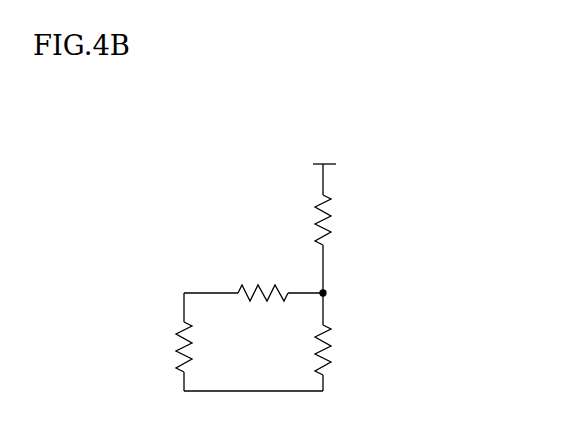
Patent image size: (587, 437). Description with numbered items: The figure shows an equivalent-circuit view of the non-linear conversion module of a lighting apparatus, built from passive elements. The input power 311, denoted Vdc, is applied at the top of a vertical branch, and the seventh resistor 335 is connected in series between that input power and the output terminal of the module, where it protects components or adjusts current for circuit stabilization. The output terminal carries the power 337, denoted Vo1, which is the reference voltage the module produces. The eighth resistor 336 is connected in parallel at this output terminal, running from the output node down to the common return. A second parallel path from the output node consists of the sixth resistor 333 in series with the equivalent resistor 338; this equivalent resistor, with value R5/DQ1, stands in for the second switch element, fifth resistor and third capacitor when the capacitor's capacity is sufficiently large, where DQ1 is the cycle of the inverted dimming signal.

The input power 311 is at (378, 167).
The sixth resistor 333 is at (265, 287).
The seventh resistor 335 is at (330, 214).
The eighth resistor 336 is at (331, 350).
The power of the output terminal 337 is at (328, 291).
The equivalent resistor 338 is at (176, 349).